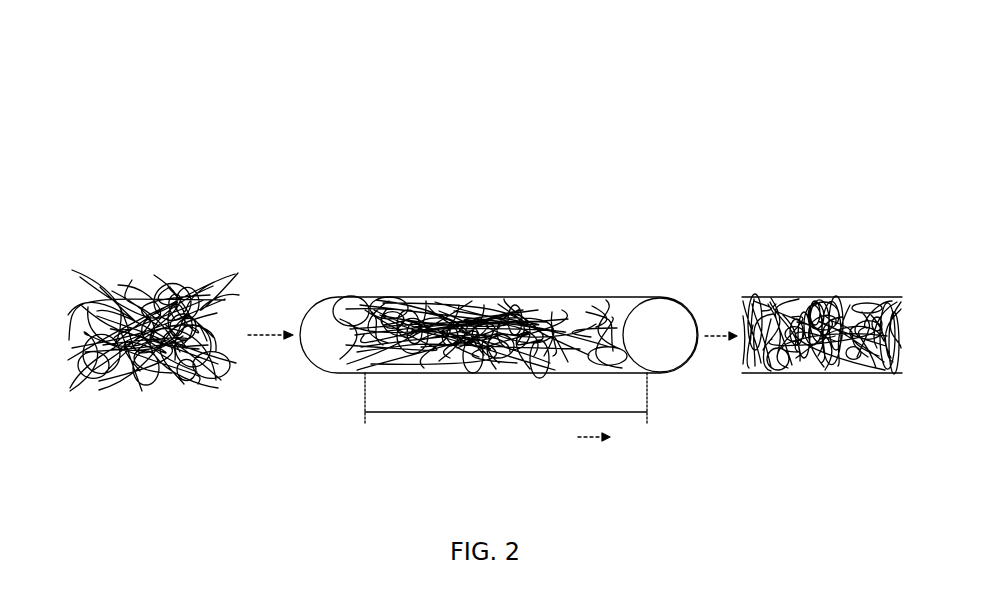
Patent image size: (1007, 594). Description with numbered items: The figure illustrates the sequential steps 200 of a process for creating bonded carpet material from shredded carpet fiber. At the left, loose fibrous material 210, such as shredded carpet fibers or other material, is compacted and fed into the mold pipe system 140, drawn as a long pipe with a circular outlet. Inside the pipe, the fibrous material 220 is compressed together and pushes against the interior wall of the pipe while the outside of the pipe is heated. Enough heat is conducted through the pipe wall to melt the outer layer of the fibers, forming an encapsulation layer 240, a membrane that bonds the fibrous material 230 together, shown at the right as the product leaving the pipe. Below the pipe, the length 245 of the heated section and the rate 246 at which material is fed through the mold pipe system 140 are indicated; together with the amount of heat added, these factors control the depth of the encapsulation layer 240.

The sequential steps 200 is at (368, 110).
The fibrous material 210 is at (192, 265).
The mold pipe system 140 is at (335, 297).
The fibrous material 220 is at (512, 305).
The bonded fibrous material 230 is at (742, 320).
The encapsulation layer 240 is at (832, 300).
The length 245 is at (418, 412).
The rate 246 is at (593, 444).